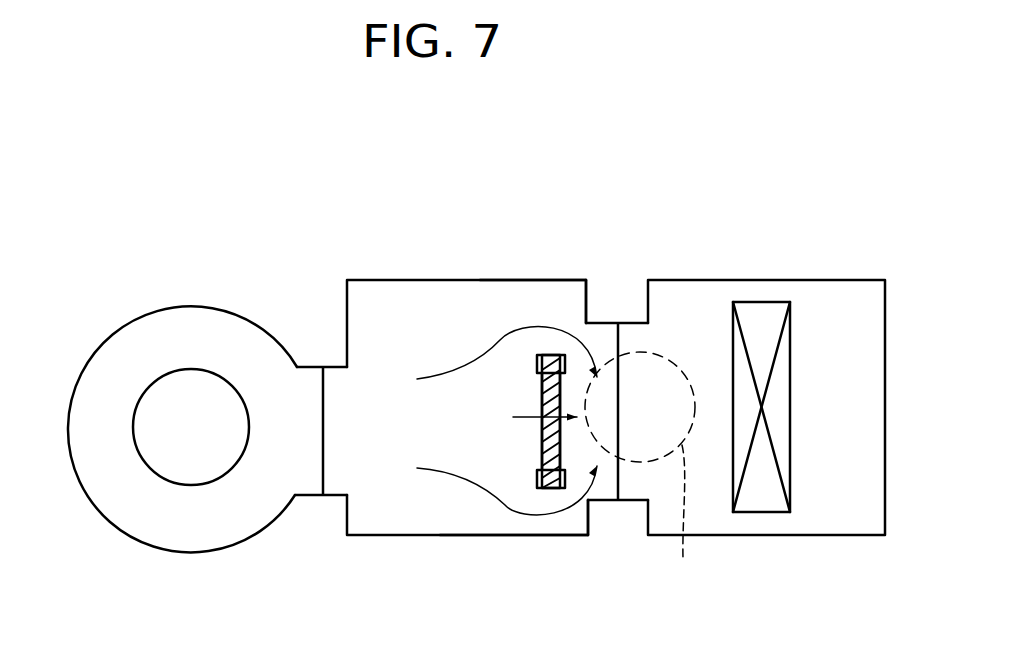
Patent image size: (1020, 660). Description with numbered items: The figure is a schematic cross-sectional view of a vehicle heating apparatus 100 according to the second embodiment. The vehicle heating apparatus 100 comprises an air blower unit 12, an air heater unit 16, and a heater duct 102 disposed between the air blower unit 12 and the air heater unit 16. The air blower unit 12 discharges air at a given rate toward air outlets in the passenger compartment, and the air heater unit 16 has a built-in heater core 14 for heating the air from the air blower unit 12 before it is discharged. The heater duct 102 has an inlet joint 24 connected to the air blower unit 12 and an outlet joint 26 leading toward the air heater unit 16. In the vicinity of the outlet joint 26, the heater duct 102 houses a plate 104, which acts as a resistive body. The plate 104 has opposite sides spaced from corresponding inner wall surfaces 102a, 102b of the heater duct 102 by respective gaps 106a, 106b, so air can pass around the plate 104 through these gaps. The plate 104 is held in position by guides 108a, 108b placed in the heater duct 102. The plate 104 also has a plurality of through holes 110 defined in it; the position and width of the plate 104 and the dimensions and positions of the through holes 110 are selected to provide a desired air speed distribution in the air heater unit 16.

The vehicle heating apparatus 100 is at (727, 173).
The air blower unit 12 is at (155, 305).
The inlet joint 24 is at (322, 357).
The heater duct 102 is at (455, 249).
The inner wall surface 102a is at (482, 533).
The inner wall surface 102b is at (553, 277).
The gap 106a is at (571, 517).
The gap 106b is at (535, 305).
The outlet joint 26 is at (619, 289).
The air heater unit 16 is at (838, 283).
The heater core 14 is at (770, 320).
The plate 104 is at (542, 390).
The through holes 110 is at (543, 452).
The guide 108a is at (537, 485).
The guide 108b is at (537, 350).